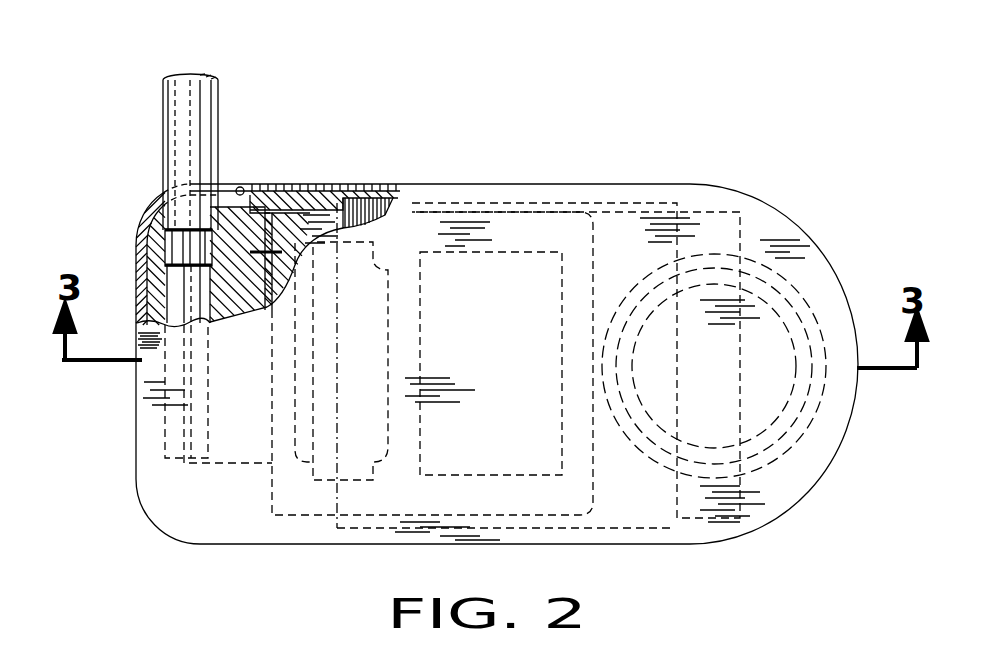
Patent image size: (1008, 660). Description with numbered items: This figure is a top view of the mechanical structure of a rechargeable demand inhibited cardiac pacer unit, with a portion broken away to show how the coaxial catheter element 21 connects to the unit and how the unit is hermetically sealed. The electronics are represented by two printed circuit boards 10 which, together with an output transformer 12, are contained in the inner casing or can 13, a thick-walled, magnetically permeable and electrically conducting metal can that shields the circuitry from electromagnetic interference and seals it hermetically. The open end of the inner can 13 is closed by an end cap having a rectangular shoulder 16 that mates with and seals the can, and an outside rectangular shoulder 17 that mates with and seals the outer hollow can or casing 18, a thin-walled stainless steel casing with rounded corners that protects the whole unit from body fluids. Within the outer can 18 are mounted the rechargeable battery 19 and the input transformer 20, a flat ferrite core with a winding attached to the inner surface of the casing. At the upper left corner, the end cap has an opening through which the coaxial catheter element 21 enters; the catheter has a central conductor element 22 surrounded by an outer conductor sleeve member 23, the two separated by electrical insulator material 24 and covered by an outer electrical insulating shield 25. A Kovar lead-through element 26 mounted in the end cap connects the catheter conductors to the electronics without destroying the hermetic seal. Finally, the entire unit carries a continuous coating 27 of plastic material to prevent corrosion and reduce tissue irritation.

The printed circuit boards 10 is at (530, 252).
The output transformer 12 is at (373, 480).
The inner casing or can 13 is at (590, 515).
The rectangular shoulder 16 is at (245, 265).
The outside rectangular shoulder 17 is at (241, 187).
The outer hollow can or casing 18 is at (383, 190).
The rechargeable battery 19 is at (807, 300).
The input transformer 20 is at (375, 218).
The coaxial catheter element 21 is at (246, 106).
The central conductor element 22 is at (243, 465).
The outer conductor sleeve member 23 is at (163, 250).
The electrical insulator material 24 is at (210, 308).
The outer electrical insulating shield 25 is at (163, 163).
The Kovar lead-through element 26 is at (258, 272).
The continuous coating 27 is at (343, 185).